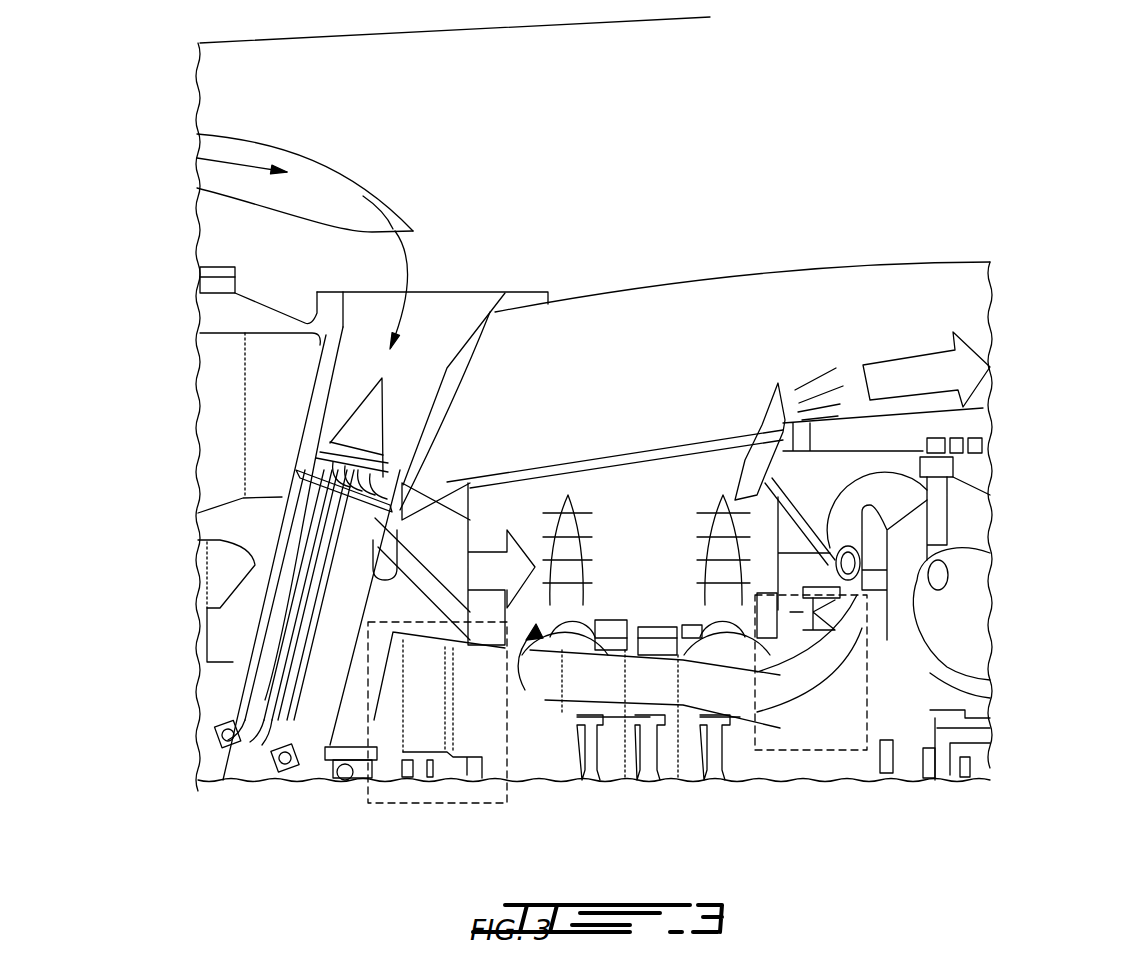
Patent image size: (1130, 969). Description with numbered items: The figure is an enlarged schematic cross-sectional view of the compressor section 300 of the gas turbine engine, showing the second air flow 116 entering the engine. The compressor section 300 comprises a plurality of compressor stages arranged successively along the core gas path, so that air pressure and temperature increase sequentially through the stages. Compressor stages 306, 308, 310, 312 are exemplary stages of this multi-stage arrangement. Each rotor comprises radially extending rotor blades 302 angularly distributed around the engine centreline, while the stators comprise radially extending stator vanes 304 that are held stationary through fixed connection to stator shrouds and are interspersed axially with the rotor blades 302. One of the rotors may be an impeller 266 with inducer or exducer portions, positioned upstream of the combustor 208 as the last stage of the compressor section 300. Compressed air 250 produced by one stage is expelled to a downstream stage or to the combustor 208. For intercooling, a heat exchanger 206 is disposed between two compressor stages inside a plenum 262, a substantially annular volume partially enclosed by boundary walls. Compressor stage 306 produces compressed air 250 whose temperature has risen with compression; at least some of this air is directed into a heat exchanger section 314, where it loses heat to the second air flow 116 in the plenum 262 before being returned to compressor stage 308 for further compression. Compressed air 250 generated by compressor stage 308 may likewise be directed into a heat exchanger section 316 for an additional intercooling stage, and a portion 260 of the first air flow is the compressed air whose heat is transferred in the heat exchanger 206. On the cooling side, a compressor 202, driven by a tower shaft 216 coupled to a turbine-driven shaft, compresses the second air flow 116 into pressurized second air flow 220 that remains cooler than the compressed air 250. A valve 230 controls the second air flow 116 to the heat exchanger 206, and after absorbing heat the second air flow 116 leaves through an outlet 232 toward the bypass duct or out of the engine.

The compressor section 300 is at (893, 103).
The second air flow 116 is at (243, 163).
The valve 230 is at (437, 497).
The pressurized second air flow 220 is at (488, 570).
The portion 260 is at (525, 625).
The heat exchanger 206 is at (687, 493).
The heat exchanger section 316 is at (763, 563).
The outlet 232 is at (790, 393).
The compressor 202 is at (363, 420).
The tower shaft 216 is at (287, 663).
The compressed air 250 is at (700, 697).
The heat exchanger section 314 is at (652, 582).
The combustor 208 is at (975, 588).
The plenum 262 is at (778, 553).
The compressor stage 306 is at (365, 792).
The stator vanes 304 is at (423, 770).
The rotor blades 302 is at (483, 770).
The compressor stage 308 is at (622, 775).
The compressor stage 310 is at (678, 778).
The impeller 266 is at (838, 700).
The compressor stage 312 is at (845, 755).